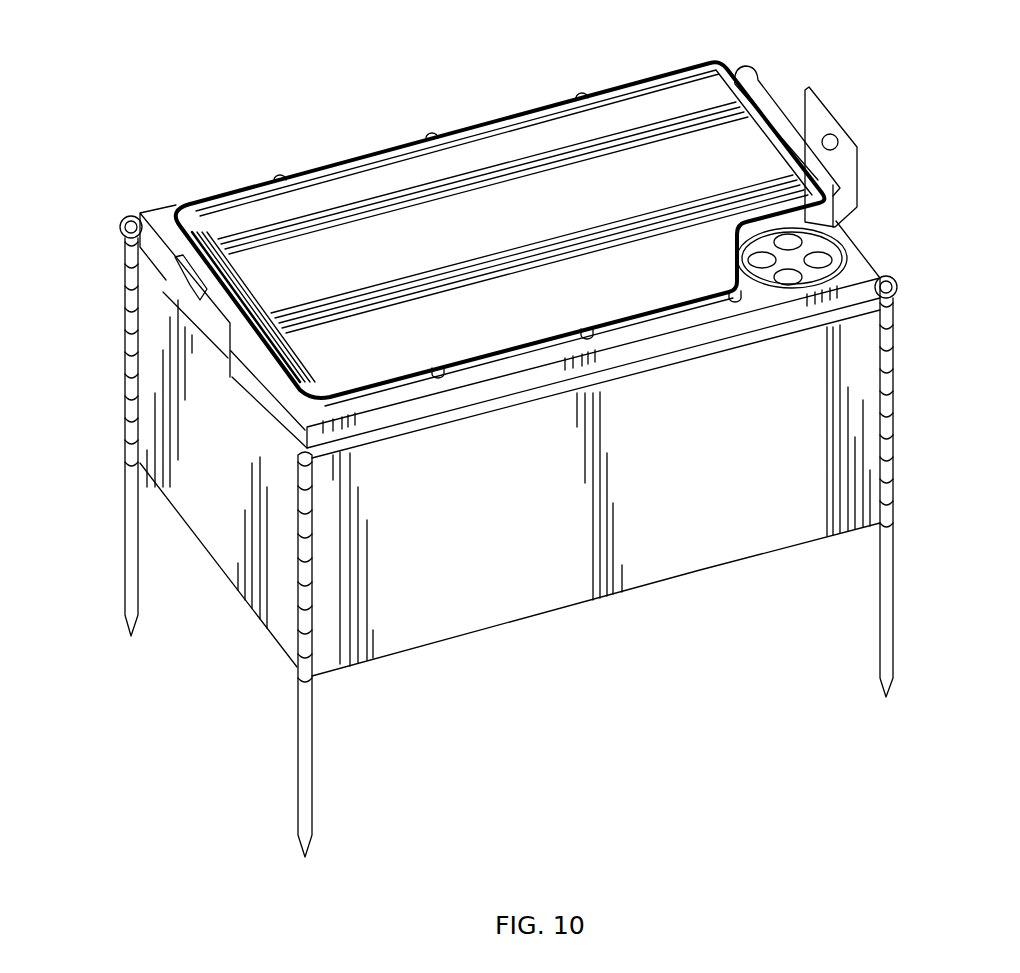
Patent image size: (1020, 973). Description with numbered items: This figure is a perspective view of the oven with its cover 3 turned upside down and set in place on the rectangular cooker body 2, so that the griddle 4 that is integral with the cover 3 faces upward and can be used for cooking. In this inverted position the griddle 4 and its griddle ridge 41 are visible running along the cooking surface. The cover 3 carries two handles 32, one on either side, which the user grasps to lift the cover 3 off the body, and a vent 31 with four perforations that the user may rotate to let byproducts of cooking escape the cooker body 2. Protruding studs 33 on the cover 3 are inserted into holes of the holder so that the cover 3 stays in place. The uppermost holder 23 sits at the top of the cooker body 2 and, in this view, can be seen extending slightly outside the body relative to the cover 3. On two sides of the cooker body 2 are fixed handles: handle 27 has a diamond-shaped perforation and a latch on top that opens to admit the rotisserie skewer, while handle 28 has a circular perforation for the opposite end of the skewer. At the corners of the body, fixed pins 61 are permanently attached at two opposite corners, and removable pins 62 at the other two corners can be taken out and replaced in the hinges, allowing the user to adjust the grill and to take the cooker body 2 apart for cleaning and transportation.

The container body 2 is at (523, 603).
The cover 3 is at (857, 263).
The griddle 4 is at (547, 128).
The uppermost holder 23 is at (853, 313).
The handle 27 is at (186, 289).
The handle 28 is at (823, 110).
The vent 31 is at (763, 245).
The handles 32 is at (757, 70).
The protruding studs 33 is at (737, 298).
The griddle ridge 41 is at (622, 328).
The fixed pins 61 is at (303, 795).
The removable pins 62 is at (125, 577).